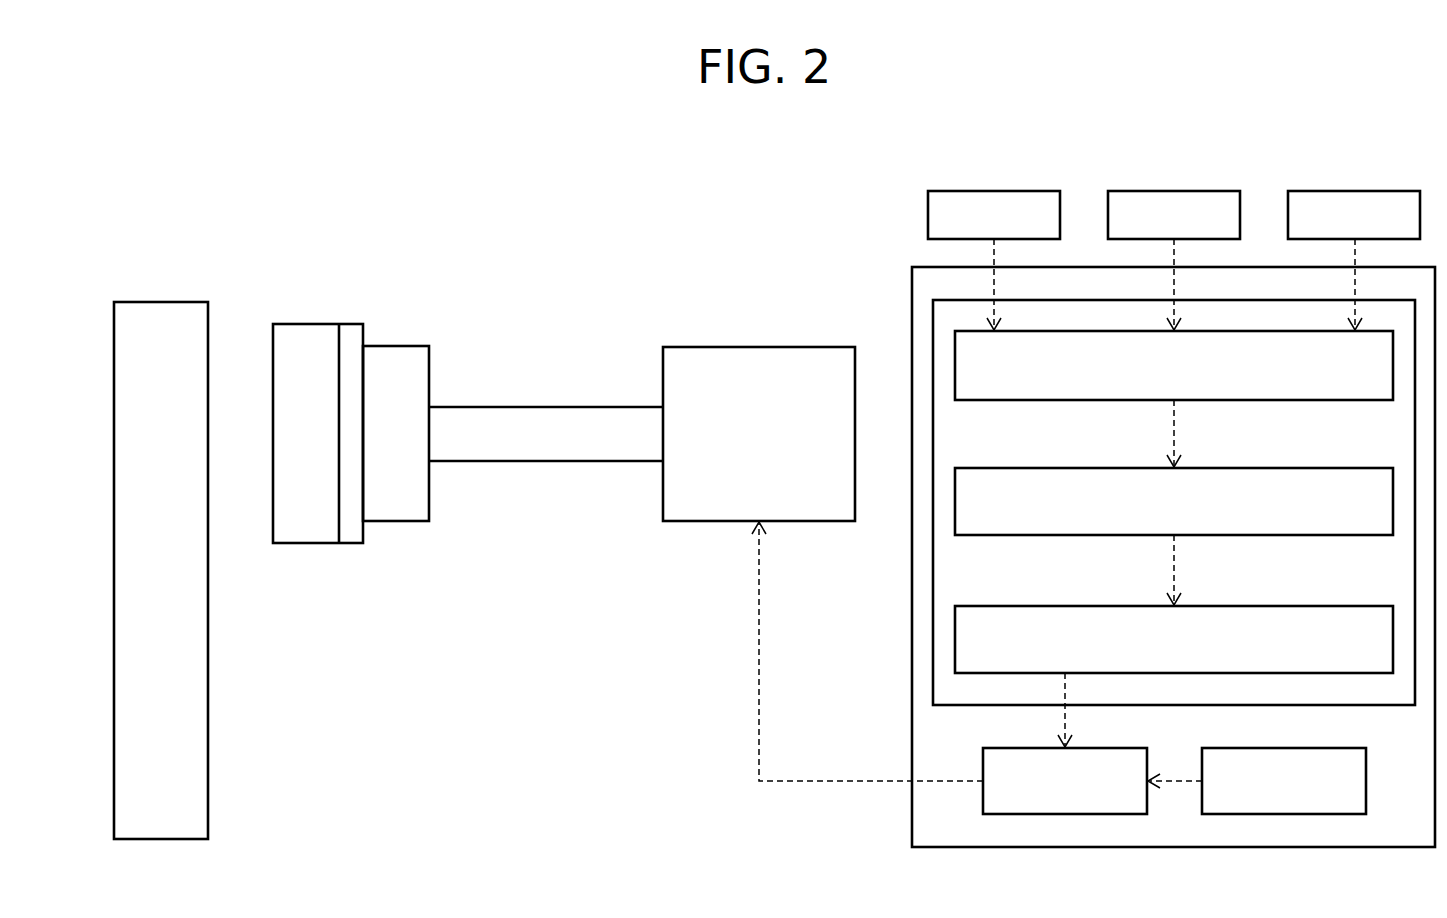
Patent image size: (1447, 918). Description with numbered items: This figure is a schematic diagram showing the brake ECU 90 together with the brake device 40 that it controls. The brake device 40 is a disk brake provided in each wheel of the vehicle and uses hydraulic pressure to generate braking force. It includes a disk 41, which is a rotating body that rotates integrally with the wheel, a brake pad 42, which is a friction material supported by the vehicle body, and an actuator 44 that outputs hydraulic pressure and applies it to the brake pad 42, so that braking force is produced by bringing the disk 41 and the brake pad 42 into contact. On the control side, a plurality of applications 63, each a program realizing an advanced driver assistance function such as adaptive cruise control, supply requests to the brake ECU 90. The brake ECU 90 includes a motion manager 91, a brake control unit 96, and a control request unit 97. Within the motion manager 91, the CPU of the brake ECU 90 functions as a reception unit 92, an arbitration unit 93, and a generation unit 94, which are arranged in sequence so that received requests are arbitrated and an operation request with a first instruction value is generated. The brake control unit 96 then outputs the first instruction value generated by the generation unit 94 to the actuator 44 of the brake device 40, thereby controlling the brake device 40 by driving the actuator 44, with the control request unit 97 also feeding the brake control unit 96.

The brake device 40 is at (858, 188).
The disk 41 is at (209, 792).
The brake pad 42 is at (302, 545).
The actuator 44 is at (800, 346).
The application 63 is at (1012, 190).
The brake ECU 90 is at (1380, 848).
The motion manager 91 is at (1396, 706).
The reception unit 92 is at (1283, 330).
The arbitration unit 93 is at (1337, 467).
The generation unit 94 is at (1337, 605).
The brake control unit 96 is at (1092, 747).
The control request unit 97 is at (1311, 747).